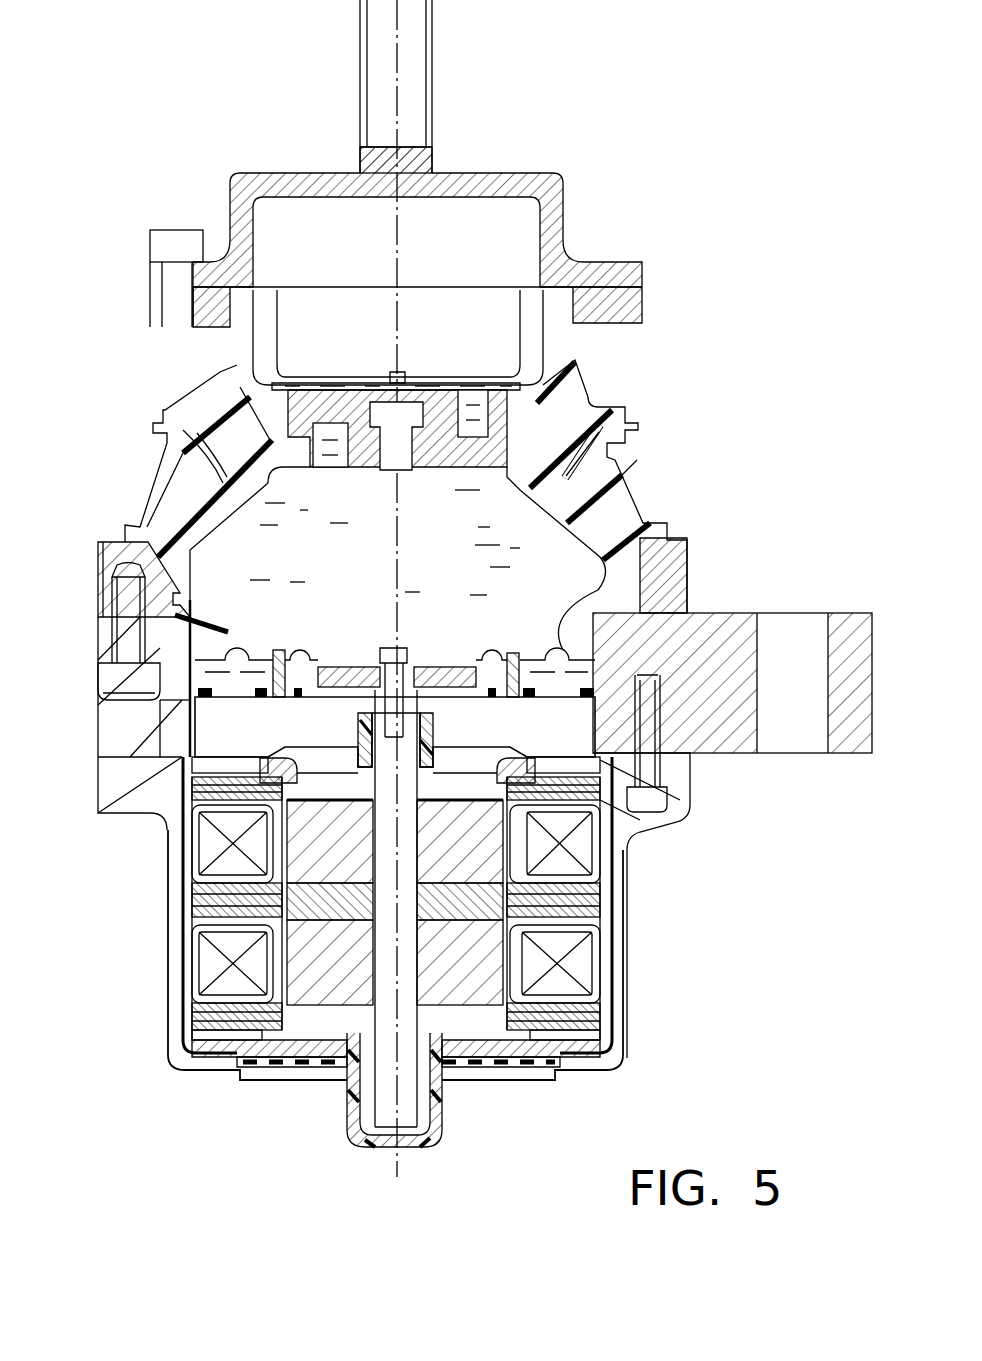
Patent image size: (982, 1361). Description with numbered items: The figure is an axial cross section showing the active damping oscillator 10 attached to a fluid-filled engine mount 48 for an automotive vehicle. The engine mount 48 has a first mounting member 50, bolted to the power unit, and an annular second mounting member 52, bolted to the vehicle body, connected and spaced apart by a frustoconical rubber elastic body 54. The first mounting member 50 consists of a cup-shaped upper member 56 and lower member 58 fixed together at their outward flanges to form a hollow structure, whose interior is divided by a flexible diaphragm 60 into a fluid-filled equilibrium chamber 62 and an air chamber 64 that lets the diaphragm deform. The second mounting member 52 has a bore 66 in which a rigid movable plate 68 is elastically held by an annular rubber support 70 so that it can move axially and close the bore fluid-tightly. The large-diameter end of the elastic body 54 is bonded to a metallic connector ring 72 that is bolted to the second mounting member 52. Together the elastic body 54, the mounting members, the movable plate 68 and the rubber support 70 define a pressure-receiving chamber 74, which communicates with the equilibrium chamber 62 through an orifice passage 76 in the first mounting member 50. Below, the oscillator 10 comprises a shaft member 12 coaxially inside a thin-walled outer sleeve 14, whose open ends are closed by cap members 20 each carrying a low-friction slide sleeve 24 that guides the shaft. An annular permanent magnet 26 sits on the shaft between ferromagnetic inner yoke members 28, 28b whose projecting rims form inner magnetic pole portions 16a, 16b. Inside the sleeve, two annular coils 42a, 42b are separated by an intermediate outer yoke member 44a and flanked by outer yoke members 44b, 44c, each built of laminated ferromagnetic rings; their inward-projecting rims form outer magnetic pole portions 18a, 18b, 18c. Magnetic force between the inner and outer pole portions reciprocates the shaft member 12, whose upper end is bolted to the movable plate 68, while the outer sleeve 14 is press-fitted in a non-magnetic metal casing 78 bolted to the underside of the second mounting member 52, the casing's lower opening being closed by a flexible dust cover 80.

The engine mount 48 is at (312, 52).
The first mounting member 50 is at (535, 158).
The upper member 56 is at (285, 180).
The air chamber 64 is at (330, 222).
The equilibrium chamber 62 is at (422, 388).
The lower member 58 is at (552, 340).
The flexible diaphragm 60 is at (248, 348).
The orifice passage 76 is at (477, 427).
The elastic body 54 is at (183, 503).
The pressure-receiving chamber 74 is at (583, 493).
The bore 66 is at (528, 537).
The connector ring 72 is at (108, 540).
The second mounting member 52 is at (733, 600).
The rubber support 70 is at (245, 668).
The movable plate 68 is at (347, 677).
The cap member 20 is at (480, 743).
The slide sleeve 24 is at (360, 725).
The inner yoke member 28 is at (463, 808).
The inner yoke member 28b is at (323, 1005).
The permanent magnet 26 is at (450, 913).
The active damping oscillator 10 is at (622, 915).
The outer yoke member 44b is at (180, 793).
The intermediate outer yoke member 44a is at (180, 903).
The outer yoke member 44c is at (622, 1020).
The outer sleeve 14 is at (180, 970).
The metal casing 78 is at (170, 943).
The coil 42a is at (207, 842).
The inner magnetic pole portion 16a is at (500, 845).
The coil 42b is at (203, 980).
The inner magnetic pole portion 16b is at (500, 963).
The outer magnetic pole portion 18b is at (300, 777).
The outer magnetic pole portion 18a is at (290, 1037).
The outer magnetic pole portion 18c is at (510, 1025).
The shaft member 12 is at (383, 1110).
The dust cover 80 is at (417, 1140).